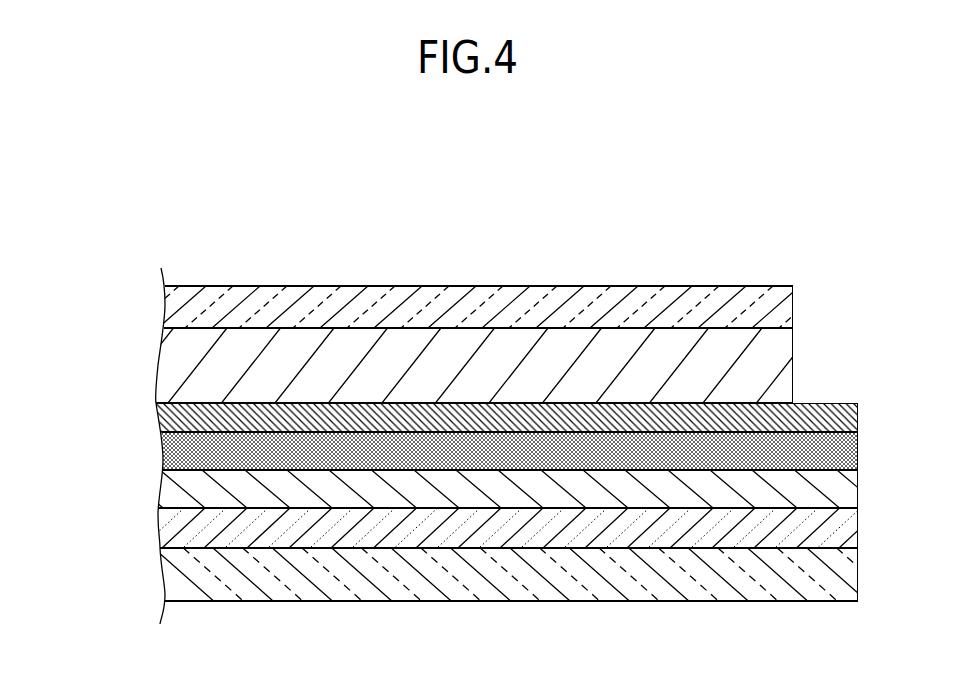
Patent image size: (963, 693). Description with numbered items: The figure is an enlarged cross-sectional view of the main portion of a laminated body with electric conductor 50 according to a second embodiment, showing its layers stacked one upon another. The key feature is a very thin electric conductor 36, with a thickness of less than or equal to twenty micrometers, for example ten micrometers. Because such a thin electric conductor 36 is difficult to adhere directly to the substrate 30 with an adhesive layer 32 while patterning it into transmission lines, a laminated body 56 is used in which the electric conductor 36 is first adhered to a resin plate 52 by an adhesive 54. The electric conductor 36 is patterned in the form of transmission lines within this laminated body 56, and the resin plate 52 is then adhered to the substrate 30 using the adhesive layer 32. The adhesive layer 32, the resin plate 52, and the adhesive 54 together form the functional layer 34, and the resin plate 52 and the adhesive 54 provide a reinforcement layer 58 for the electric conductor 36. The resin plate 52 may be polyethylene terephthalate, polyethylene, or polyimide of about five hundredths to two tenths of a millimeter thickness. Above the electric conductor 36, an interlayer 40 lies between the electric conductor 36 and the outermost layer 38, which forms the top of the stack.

The substrate 30 is at (858, 573).
The adhesive layer 32 is at (858, 518).
The functional layer 34 is at (155, 547).
The electric conductor 36 is at (858, 418).
The outer layer 38 is at (793, 306).
The interlayer 40 is at (793, 347).
The laminated body with electric conductor 50 is at (650, 272).
The resin plate 52 is at (858, 490).
The adhesive 54 is at (858, 453).
The laminated body 56 is at (155, 508).
The reinforcement layer 58 is at (149, 433).